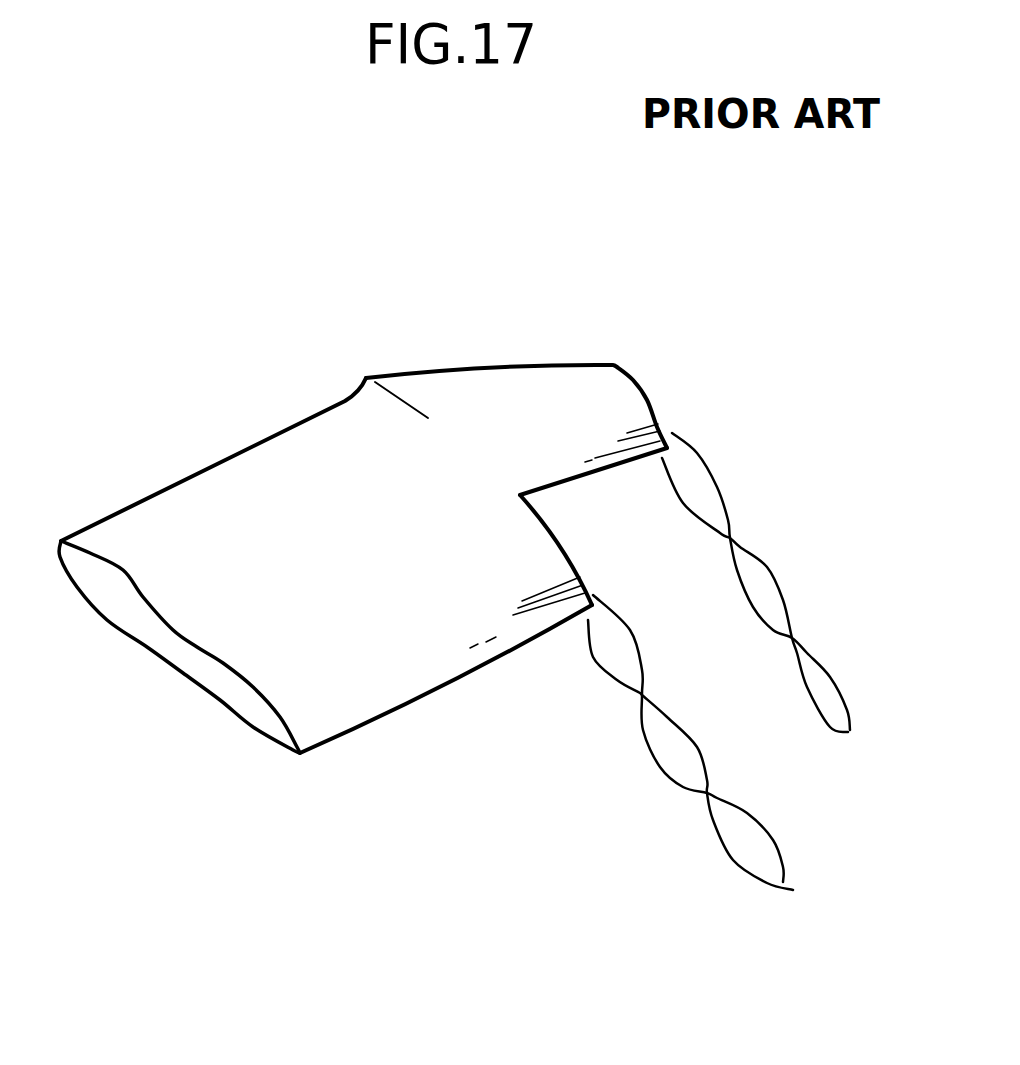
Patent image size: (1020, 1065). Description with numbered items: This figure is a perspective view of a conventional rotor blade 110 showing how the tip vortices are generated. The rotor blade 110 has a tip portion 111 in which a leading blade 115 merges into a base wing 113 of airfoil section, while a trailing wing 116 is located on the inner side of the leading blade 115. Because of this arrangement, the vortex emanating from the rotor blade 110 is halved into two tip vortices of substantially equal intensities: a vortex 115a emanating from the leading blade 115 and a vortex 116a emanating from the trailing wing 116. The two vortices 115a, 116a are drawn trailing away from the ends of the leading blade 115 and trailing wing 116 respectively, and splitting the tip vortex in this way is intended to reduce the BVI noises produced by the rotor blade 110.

The rotor blade 110 is at (138, 382).
The tip portion 111 is at (252, 402).
The base wing 113 is at (153, 517).
The leading blade 115 is at (555, 383).
The vortex 115a is at (773, 575).
The trailing wing 116 is at (540, 640).
The vortex 116a is at (668, 775).